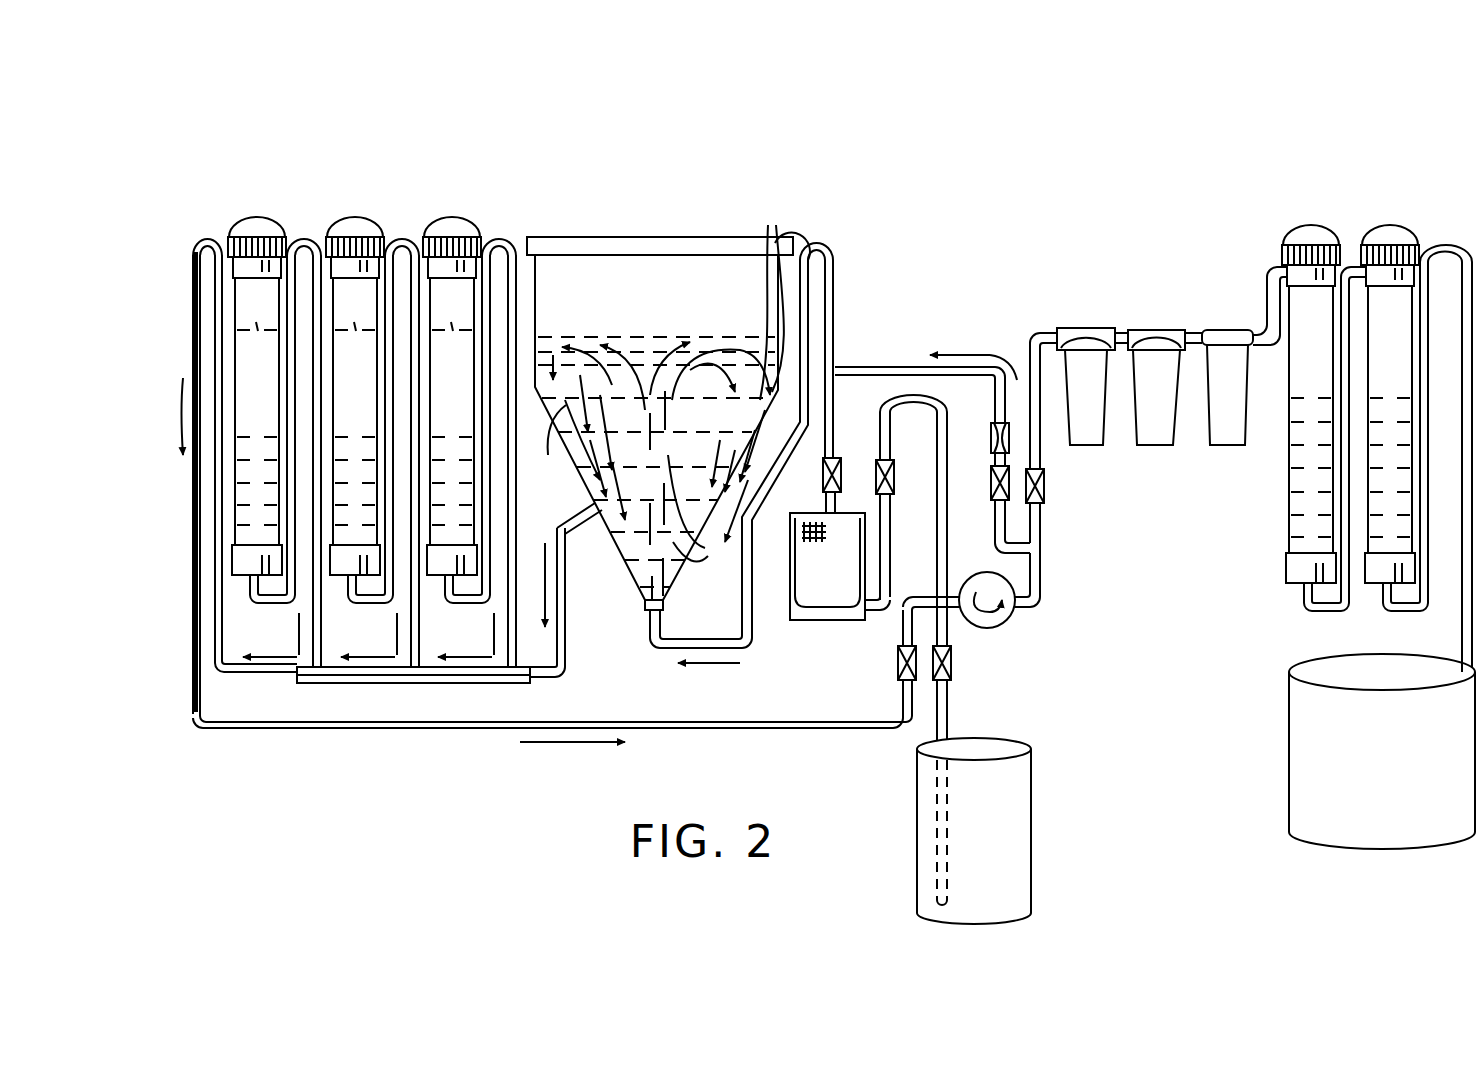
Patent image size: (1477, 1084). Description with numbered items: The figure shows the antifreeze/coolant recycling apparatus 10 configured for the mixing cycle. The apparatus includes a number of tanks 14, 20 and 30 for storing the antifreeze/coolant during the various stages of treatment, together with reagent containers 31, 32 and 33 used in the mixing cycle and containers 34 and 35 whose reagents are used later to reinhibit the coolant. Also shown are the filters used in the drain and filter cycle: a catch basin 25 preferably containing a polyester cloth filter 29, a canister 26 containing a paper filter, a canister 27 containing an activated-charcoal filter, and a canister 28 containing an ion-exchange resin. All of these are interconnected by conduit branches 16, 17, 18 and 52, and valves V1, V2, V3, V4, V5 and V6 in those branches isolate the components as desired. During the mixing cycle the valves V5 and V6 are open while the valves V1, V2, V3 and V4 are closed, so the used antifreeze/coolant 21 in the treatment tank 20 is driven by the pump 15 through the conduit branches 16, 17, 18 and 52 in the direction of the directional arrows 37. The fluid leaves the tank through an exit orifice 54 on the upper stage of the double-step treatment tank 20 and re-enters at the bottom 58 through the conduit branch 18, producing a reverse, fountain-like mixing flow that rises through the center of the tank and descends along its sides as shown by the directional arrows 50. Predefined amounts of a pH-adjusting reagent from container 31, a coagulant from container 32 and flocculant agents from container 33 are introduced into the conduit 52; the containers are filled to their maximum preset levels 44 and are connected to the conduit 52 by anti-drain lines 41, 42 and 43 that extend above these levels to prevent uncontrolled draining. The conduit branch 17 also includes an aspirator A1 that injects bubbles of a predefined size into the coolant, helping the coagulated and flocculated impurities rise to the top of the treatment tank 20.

The recycling apparatus 10 is at (1054, 178).
The tank 14 is at (1022, 817).
The pump 15 is at (1008, 611).
The conduit branch 16 is at (1041, 578).
The conduit branch 17 is at (890, 367).
The conduit branch 18 is at (656, 648).
The treatment tank 20 is at (648, 309).
The antifreeze/coolant 21 is at (692, 362).
The catch basin 25 is at (832, 621).
The canister 26 is at (1078, 328).
The canister 27 is at (1153, 330).
The canister 28 is at (1227, 330).
The polyester cloth filter 29 is at (808, 582).
The tank 30 is at (1365, 800).
The reagent container 31 is at (266, 222).
The reagent container 32 is at (363, 222).
The reagent container 33 is at (462, 222).
The container 34 is at (1318, 228).
The container 35 is at (1397, 226).
The directional arrows 37 is at (1030, 645).
The anti-drain line 41 is at (312, 243).
The anti-drain line 42 is at (410, 243).
The anti-drain line 43 is at (516, 243).
The maximum preset level 44 is at (354, 407).
The directional arrows 50 is at (656, 383).
The conduit branch 52 is at (194, 296).
The exit orifice 54 is at (600, 508).
The bottom of treatment tank 58 is at (645, 608).
The valve V1 is at (815, 475).
The valve V2 is at (906, 567).
The valve V3 is at (960, 668).
The valve V4 is at (1055, 486).
The valve V5 is at (981, 483).
The valve V6 is at (886, 668).
The aspirator A1 is at (982, 439).